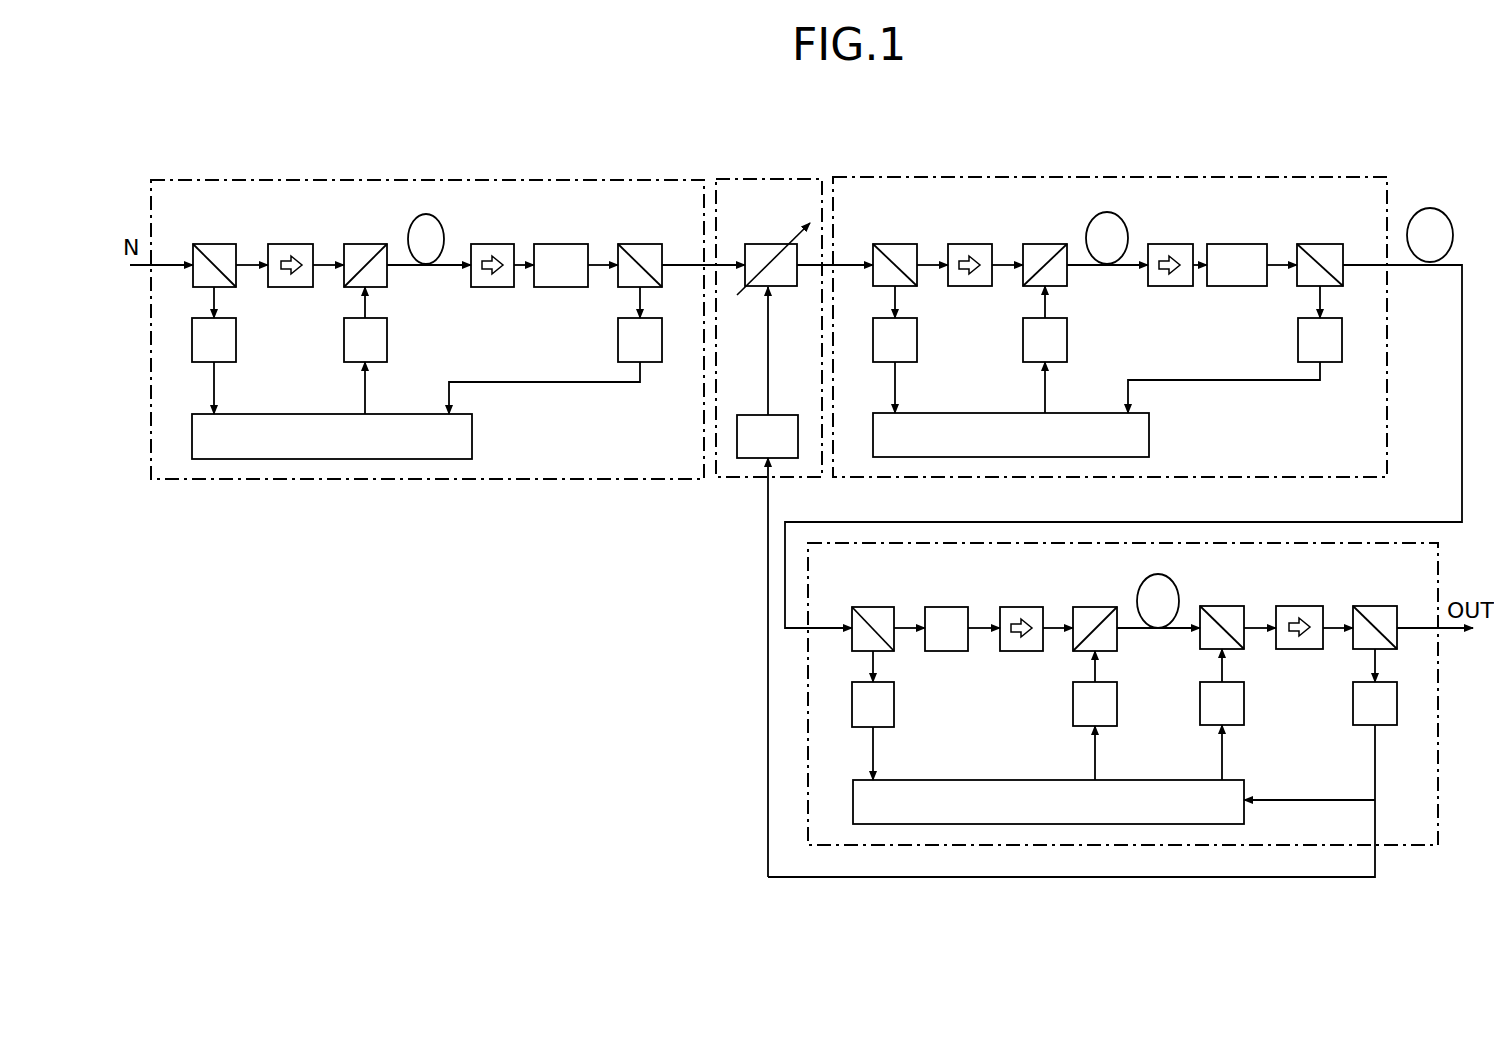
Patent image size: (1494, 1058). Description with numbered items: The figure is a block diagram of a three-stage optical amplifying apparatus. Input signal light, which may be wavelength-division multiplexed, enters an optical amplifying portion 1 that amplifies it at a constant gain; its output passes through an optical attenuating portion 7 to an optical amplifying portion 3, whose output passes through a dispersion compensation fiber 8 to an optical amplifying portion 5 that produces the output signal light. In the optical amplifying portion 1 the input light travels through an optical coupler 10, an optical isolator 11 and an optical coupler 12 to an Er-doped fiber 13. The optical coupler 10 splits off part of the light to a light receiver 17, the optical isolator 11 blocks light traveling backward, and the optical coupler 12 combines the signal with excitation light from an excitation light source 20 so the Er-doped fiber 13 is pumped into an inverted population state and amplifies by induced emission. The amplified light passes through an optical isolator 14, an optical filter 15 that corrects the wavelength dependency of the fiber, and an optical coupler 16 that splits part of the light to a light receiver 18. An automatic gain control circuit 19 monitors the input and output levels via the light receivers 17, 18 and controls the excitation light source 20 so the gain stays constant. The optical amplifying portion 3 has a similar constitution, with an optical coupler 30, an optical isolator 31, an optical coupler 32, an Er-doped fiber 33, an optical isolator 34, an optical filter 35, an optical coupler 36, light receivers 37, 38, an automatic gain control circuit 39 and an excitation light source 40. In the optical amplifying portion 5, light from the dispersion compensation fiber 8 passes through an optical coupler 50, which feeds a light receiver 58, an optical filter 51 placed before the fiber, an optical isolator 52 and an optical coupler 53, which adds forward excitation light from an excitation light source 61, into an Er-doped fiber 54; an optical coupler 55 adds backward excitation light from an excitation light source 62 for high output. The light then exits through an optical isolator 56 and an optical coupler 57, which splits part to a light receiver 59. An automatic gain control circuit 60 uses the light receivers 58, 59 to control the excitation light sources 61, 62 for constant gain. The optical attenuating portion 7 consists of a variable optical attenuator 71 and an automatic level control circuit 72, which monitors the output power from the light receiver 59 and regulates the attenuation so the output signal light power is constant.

The optical amplifying portion 1 is at (680, 180).
The optical amplifying portion 3 is at (1373, 177).
The optical amplifying portion 5 is at (1416, 845).
The optical attenuating portion 7 is at (806, 179).
The dispersion compensation fiber 8 is at (1432, 219).
The optical coupler 10 is at (214, 244).
The optical isolator 11 is at (290, 244).
The optical coupler 12 is at (365, 244).
The Er-doped fiber 13 is at (431, 225).
The optical isolator 14 is at (492, 244).
The optical filter 15 is at (562, 244).
The optical coupler 16 is at (640, 244).
The light receiver 17 is at (192, 336).
The light receiver 18 is at (662, 338).
The automatic gain control circuit 19 is at (192, 438).
The excitation light source 20 is at (344, 336).
The optical coupler 30 is at (895, 244).
The optical isolator 31 is at (970, 244).
The optical coupler 32 is at (1045, 244).
The Er-doped fiber 33 is at (1104, 224).
The optical isolator 34 is at (1170, 244).
The optical filter 35 is at (1245, 244).
The optical coupler 36 is at (1322, 244).
The light receiver 37 is at (873, 338).
The light receiver 38 is at (1342, 338).
The automatic gain control circuit 39 is at (873, 436).
The excitation light source 40 is at (1023, 336).
The optical coupler 50 is at (873, 607).
The optical filter 51 is at (946, 607).
The optical isolator 52 is at (1022, 607).
The optical coupler 53 is at (1095, 607).
The Er-doped fiber 54 is at (1156, 590).
The optical coupler 55 is at (1222, 606).
The optical isolator 56 is at (1300, 606).
The optical coupler 57 is at (1375, 606).
The light receiver 58 is at (852, 704).
The light receiver 59 is at (1397, 702).
The automatic gain control circuit 60 is at (853, 804).
The excitation light source 61 is at (1073, 702).
The excitation light source 62 is at (1244, 704).
The variable optical attenuator 71 is at (768, 244).
The automatic level control circuit 72 is at (755, 415).